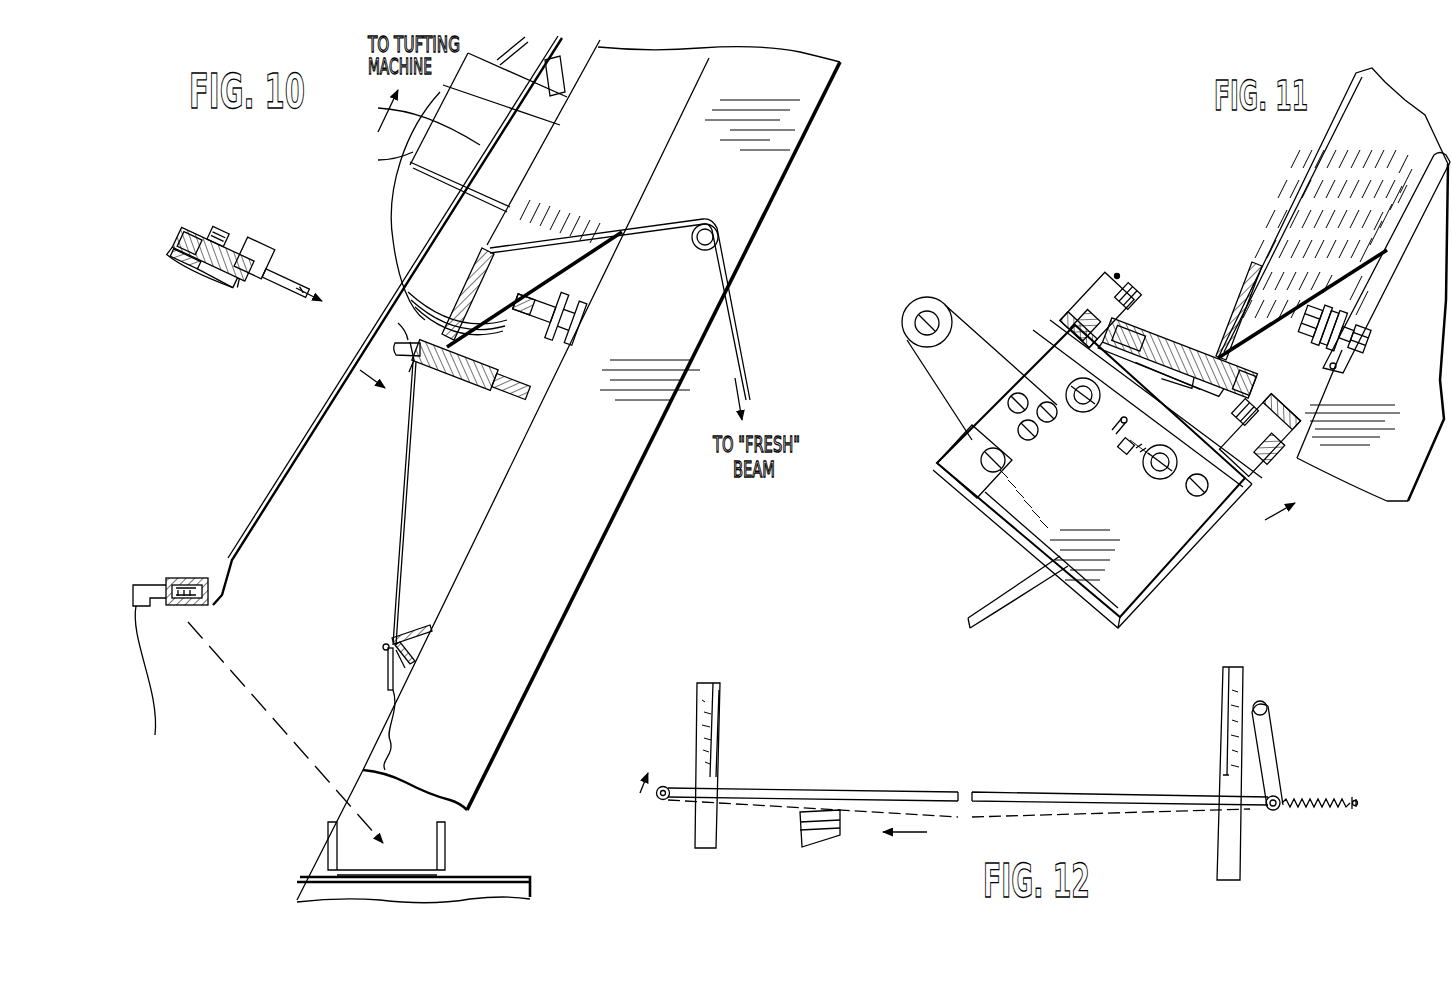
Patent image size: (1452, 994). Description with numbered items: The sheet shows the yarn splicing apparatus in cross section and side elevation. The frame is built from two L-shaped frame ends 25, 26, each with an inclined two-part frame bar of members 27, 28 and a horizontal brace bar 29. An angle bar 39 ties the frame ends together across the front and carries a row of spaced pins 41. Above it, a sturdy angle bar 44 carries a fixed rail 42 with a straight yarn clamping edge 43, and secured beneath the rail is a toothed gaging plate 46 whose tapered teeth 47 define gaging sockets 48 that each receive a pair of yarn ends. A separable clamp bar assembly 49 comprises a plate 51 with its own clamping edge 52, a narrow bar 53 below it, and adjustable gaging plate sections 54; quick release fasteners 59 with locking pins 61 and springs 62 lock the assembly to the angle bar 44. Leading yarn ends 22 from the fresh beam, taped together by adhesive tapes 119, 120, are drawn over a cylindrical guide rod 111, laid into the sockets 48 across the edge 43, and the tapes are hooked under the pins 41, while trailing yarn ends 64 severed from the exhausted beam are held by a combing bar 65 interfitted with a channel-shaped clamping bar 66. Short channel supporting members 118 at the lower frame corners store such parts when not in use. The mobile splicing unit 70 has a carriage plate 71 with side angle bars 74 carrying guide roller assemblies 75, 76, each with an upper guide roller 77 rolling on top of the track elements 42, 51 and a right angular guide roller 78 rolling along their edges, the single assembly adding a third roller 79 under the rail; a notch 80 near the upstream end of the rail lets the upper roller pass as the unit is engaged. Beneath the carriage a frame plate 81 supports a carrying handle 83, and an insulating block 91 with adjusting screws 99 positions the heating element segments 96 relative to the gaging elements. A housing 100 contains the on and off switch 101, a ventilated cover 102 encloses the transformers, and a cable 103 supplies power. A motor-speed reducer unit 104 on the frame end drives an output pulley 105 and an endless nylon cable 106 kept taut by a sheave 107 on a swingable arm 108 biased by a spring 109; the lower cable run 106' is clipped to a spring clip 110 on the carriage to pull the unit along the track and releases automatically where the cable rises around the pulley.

In FIG. 10, the yarn ends 22 is at (400, 501).
In FIG. 10, the frame end 25 is at (795, 165).
In FIG. 12, the frame end 25 is at (698, 715).
In FIG. 11, the frame end 26 is at (1320, 142).
In FIG. 12, the frame end 26 is at (1250, 680).
In FIG. 10, the frame bar member 27 is at (648, 99).
In FIG. 11, the frame bar member 27 is at (1305, 190).
In FIG. 10, the frame bar member 28 is at (612, 524).
In FIG. 11, the frame bar member 28 is at (1361, 473).
In FIG. 10, the brace bar 29 is at (505, 876).
In FIG. 10, the angle bar 39 is at (421, 626).
In FIG. 10, the pins 41 is at (384, 646).
In FIG. 10, the rail 42 is at (486, 380).
In FIG. 11, the rail 42 is at (1254, 383).
In FIG. 10, the yarn clamping edge 43 is at (452, 345).
In FIG. 11, the yarn clamping edge 43 is at (1195, 350).
In FIG. 10, the angle bar 44 is at (490, 353).
In FIG. 11, the angle bar 44 is at (1240, 290).
In FIG. 10, the gaging plate 46 is at (413, 375).
In FIG. 11, the gaging plate 46 is at (1206, 376).
In FIG. 10, the teeth 47 is at (400, 330).
In FIG. 11, the teeth 47 is at (1170, 362).
In FIG. 10, the yarn gaging sockets 48 is at (415, 351).
In FIG. 10, the clamp bar assembly 49 is at (198, 226).
In FIG. 11, the clamp bar assembly 49 is at (1148, 322).
In FIG. 10, the plate 51 is at (225, 282).
In FIG. 11, the plate 51 is at (1150, 333).
In FIG. 10, the yarn clamping edge 52 is at (262, 280).
In FIG. 10, the bar 53 is at (197, 272).
In FIG. 11, the bar 53 is at (1105, 345).
In FIG. 10, the gaging plate sections 54 is at (242, 290).
In FIG. 11, the gaging plate sections 54 is at (1132, 362).
In FIG. 10, the quick release fasteners 59 is at (270, 248).
In FIG. 10, the locking pins 61 is at (300, 262).
In FIG. 10, the springs 62 is at (228, 222).
In FIG. 10, the yarn ends 64 is at (301, 449).
In FIG. 10, the combing bar 65 is at (141, 590).
In FIG. 10, the clamping bar 66 is at (190, 580).
In FIG. 11, the splicing unit 70 is at (1010, 538).
In FIG. 12, the splicing unit 70 is at (826, 838).
In FIG. 11, the carriage plate 71 is at (1063, 345).
In FIG. 11, the side angle bars 74 is at (1096, 291).
In FIG. 11, the guide roller assembly 75 is at (1308, 419).
In FIG. 11, the guide roller assemblies 76 is at (1118, 272).
In FIG. 11, the upper guide roller 77 is at (1128, 284).
In FIG. 11, the right angular guide roller 78 is at (1076, 311).
In FIG. 11, the third roller 79 is at (1196, 487).
In FIG. 11, the notch 80 is at (1336, 367).
In FIG. 11, the frame plate 81 is at (966, 470).
In FIG. 11, the carrying handle 83 is at (935, 298).
In FIG. 11, the insulating block 91 is at (1110, 430).
In FIG. 11, the heating element segments 96 is at (1138, 450).
In FIG. 11, the adjusting screws 99 is at (1018, 393).
In FIG. 11, the housing 100 is at (1150, 561).
In FIG. 11, the switch 101 is at (1125, 449).
In FIG. 11, the ventilated cover 102 is at (1076, 582).
In FIG. 11, the cable 103 is at (1005, 615).
In FIG. 10, the motor-speed reducer unit 104 is at (413, 150).
In FIG. 10, the output pulley 105 is at (565, 320).
In FIG. 12, the output pulley 105 is at (660, 800).
In FIG. 10, the cable 106 is at (582, 290).
In FIG. 11, the cable 106 is at (1340, 289).
In FIG. 12, the cable 106 is at (968, 772).
In FIG. 12, the lower cable run 106' is at (959, 831).
In FIG. 11, the sheave 107 is at (1360, 336).
In FIG. 12, the sheave 107 is at (1275, 812).
In FIG. 11, the swingable arm 108 is at (1378, 283).
In FIG. 12, the swingable arm 108 is at (1277, 753).
In FIG. 12, the spring 109 is at (1318, 808).
In FIG. 12, the spring clip 110 is at (807, 812).
In FIG. 10, the guide rod 111 is at (722, 238).
In FIG. 10, the channel supporting members 118 is at (328, 843).
In FIG. 10, the adhesive tape 119 is at (388, 676).
In FIG. 10, the adhesive tape 120 is at (407, 668).